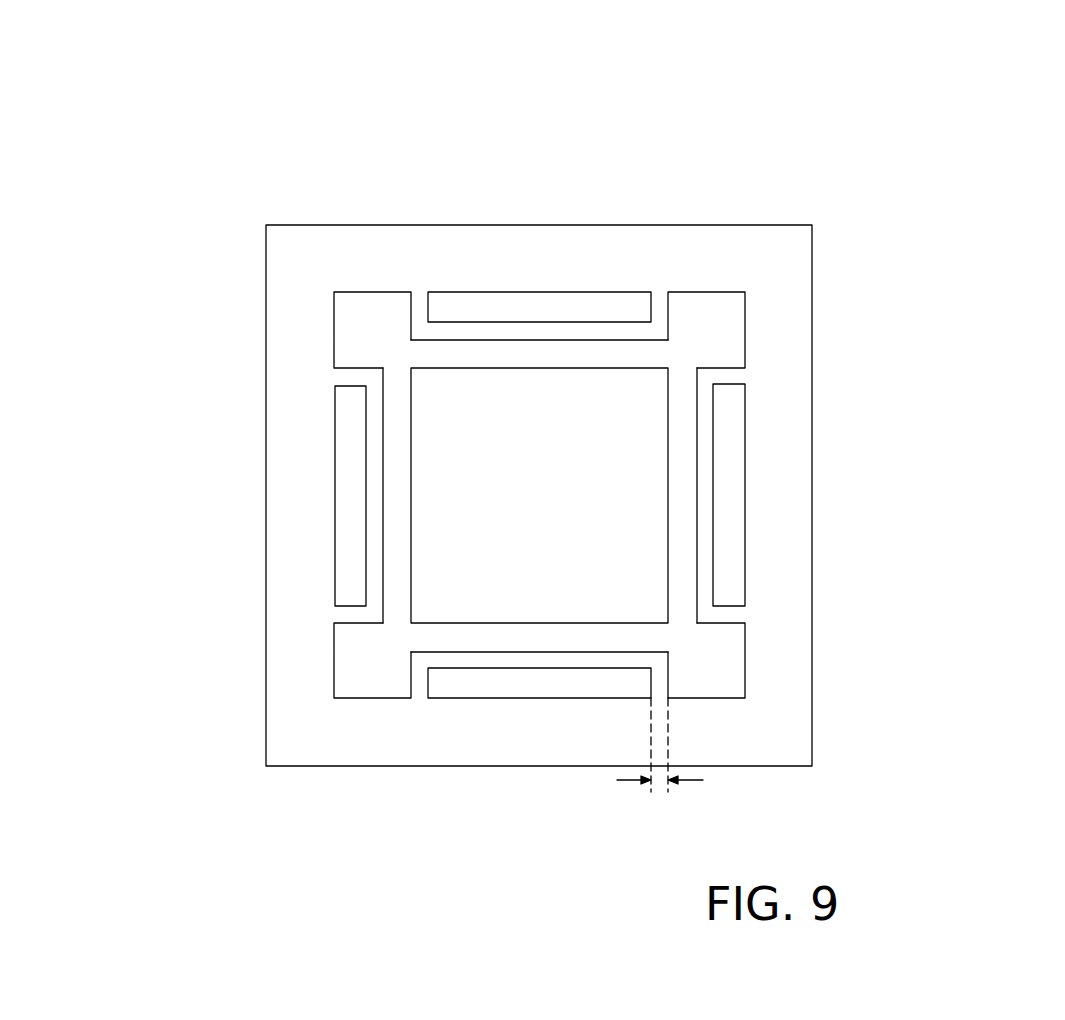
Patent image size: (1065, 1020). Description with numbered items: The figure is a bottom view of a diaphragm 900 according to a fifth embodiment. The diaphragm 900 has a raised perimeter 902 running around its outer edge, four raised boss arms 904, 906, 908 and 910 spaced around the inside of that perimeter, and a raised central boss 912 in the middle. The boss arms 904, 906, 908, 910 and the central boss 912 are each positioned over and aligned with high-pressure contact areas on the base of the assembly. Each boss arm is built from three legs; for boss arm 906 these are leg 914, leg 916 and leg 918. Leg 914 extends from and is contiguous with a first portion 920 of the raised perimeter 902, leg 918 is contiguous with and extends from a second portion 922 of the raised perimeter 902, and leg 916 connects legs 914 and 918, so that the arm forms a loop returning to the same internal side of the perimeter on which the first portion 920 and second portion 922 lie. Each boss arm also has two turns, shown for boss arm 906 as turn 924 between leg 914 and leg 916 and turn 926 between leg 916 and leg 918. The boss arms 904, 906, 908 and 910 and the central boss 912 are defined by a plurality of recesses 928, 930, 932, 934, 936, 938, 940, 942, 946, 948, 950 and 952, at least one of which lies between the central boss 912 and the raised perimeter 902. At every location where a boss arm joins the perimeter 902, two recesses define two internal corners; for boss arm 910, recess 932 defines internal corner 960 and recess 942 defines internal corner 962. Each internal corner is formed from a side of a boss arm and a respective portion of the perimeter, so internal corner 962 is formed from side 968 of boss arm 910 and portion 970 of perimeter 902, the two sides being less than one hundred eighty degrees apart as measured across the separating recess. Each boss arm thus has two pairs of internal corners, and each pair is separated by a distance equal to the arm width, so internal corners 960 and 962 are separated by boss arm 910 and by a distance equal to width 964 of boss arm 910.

The diaphragm 900 is at (957, 172).
The raised perimeter 902 is at (785, 528).
The raised boss arm 904 is at (705, 413).
The raised boss arm 906 is at (572, 328).
The raised boss arm 908 is at (377, 462).
The raised boss arm 910 is at (520, 657).
The raised central boss 912 is at (557, 505).
The leg 914 is at (655, 303).
The leg 916 is at (463, 330).
The leg 918 is at (405, 292).
The first portion 920 is at (683, 290).
The second portion 922 is at (422, 298).
The turn 924 is at (680, 339).
The turn 926 is at (398, 343).
The recess 928 is at (628, 305).
The recess 930 is at (350, 410).
The recess 932 is at (493, 688).
The recess 934 is at (727, 579).
The recess 936 is at (737, 307).
The recess 938 is at (362, 302).
The recess 940 is at (348, 680).
The recess 942 is at (725, 683).
The recess 946 is at (497, 355).
The recess 948 is at (395, 555).
The recess 950 is at (435, 633).
The recess 952 is at (687, 480).
The internal corner 960 is at (646, 697).
The internal corner 962 is at (672, 690).
The width 964 is at (703, 782).
The side 968 is at (668, 681).
The portion 970 is at (712, 703).